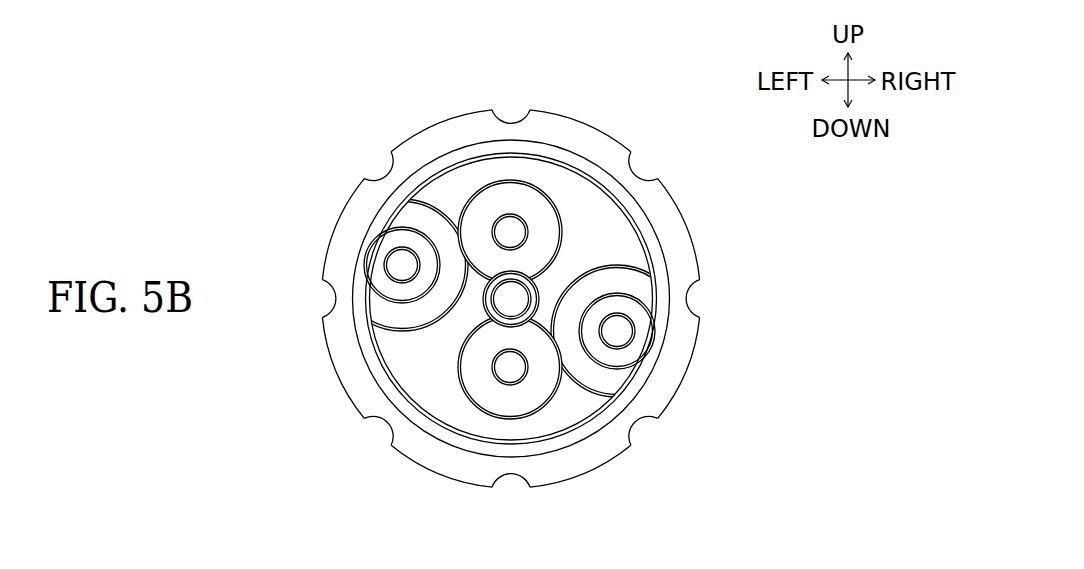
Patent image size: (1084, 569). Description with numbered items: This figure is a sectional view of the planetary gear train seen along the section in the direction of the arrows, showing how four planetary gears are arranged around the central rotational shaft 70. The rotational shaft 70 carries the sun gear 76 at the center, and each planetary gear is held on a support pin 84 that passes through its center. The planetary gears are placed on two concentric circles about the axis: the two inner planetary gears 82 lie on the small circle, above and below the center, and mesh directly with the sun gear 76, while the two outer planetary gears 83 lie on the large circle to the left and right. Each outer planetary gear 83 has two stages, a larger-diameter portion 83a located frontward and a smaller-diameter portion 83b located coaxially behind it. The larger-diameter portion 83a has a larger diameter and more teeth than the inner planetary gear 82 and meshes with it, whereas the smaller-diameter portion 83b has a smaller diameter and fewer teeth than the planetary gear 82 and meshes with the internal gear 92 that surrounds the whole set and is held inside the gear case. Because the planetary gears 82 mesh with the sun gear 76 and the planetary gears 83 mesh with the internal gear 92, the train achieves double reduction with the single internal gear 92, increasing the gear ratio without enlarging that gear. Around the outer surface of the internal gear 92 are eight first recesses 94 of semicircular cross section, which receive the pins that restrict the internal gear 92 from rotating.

The rotational shaft 70 is at (522, 290).
The sun gear 76 is at (505, 305).
The planetary gear 82 is at (488, 200).
The planetary gear 83 is at (521, 304).
The larger-diameter portion 83a is at (405, 218).
The smaller-diameter portion 83b is at (393, 240).
The support pin 84 is at (513, 230).
The internal gear 92 is at (597, 142).
The first recess 94 is at (512, 106).